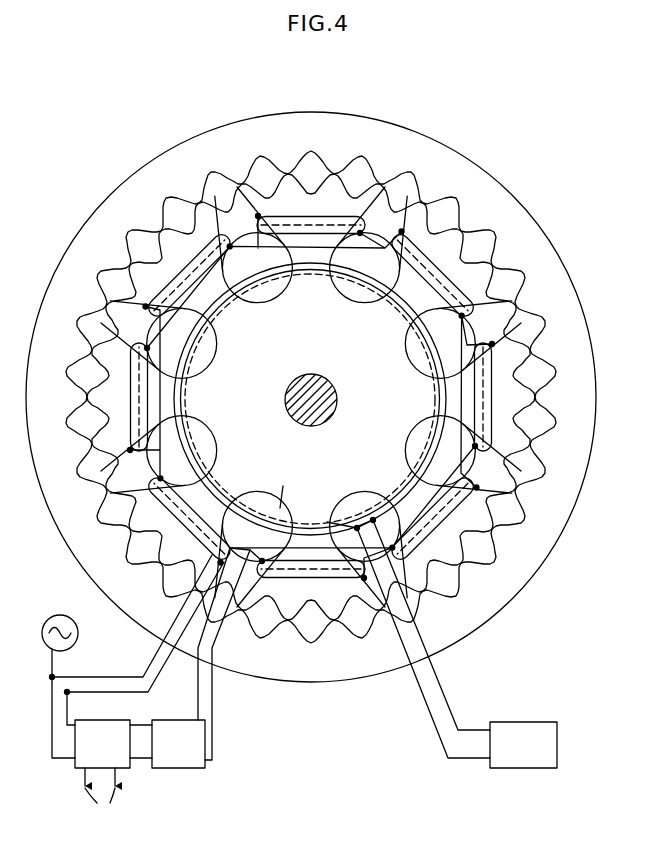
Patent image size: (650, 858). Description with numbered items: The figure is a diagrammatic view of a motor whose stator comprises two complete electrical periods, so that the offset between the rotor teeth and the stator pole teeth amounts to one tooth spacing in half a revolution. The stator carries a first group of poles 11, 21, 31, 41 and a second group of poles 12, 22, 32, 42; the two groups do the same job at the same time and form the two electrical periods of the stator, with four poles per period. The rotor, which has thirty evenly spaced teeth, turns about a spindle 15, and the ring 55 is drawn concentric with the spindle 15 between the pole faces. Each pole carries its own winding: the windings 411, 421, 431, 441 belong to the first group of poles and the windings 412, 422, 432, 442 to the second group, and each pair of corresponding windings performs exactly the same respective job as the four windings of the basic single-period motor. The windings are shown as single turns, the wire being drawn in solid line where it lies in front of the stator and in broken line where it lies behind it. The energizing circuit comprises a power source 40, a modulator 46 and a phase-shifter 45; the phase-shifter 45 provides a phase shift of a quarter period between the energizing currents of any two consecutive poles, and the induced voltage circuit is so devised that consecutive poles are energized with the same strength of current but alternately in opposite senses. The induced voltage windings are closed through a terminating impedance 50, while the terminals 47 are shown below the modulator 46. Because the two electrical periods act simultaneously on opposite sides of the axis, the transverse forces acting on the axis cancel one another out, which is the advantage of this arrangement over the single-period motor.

The stator pole 11 is at (311, 216).
The stator pole 21 is at (455, 252).
The stator pole 31 is at (491, 397).
The stator pole 41 is at (455, 541).
The stator pole 12 is at (311, 578).
The stator pole 22 is at (166, 541).
The stator pole 32 is at (130, 397).
The stator pole 42 is at (166, 252).
The winding 411 is at (327, 216).
The winding 421 is at (459, 291).
The winding 431 is at (493, 427).
The winding 441 is at (446, 532).
The winding 412 is at (336, 580).
The winding 422 is at (200, 538).
The winding 432 is at (135, 413).
The winding 442 is at (161, 294).
The spindle 15 is at (333, 383).
The rotor ring 55 is at (185, 404).
The power source 40 is at (57, 616).
The phase-shifter 45 is at (178, 744).
The modulator 46 is at (102, 744).
The output terminals 47 is at (100, 795).
The terminating impedance 50 is at (523, 745).